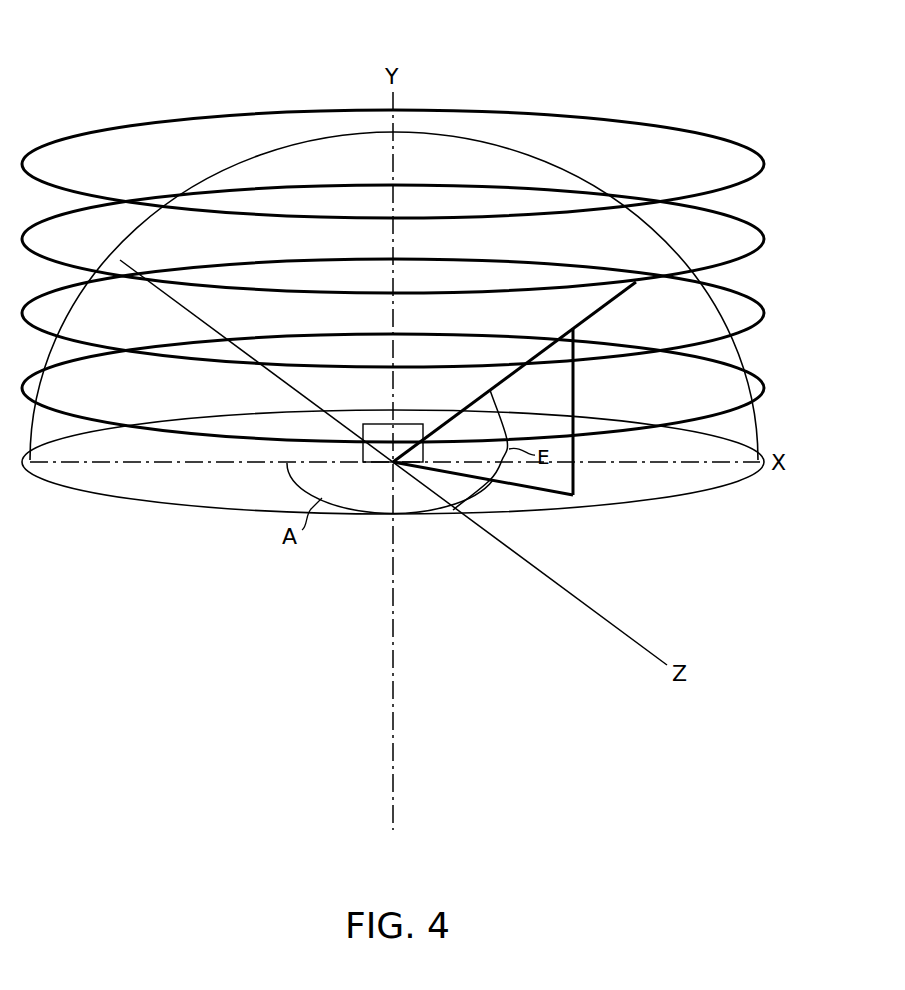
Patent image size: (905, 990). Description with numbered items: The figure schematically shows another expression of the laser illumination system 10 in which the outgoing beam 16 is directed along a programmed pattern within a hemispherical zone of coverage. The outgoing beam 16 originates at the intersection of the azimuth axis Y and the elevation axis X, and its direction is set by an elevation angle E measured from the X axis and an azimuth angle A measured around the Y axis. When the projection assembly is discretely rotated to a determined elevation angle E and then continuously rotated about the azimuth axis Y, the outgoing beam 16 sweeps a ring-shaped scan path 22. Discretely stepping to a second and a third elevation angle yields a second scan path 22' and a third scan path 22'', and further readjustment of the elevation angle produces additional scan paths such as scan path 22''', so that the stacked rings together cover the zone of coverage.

The laser illumination system 10 is at (193, 76).
The outgoing beam 16 is at (533, 359).
The scan path 22 is at (421, 388).
The second scan path 22' is at (423, 313).
The third scan path 22'' is at (425, 239).
The scan path 22''' is at (426, 164).